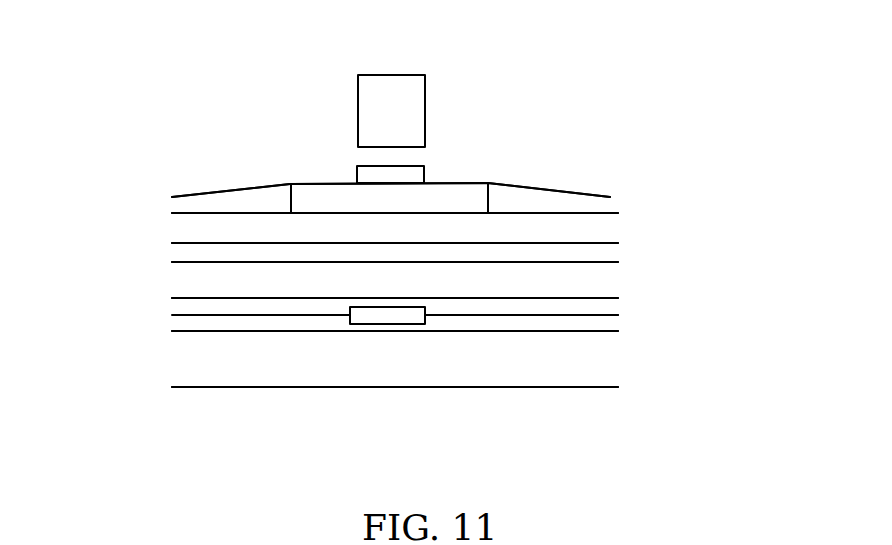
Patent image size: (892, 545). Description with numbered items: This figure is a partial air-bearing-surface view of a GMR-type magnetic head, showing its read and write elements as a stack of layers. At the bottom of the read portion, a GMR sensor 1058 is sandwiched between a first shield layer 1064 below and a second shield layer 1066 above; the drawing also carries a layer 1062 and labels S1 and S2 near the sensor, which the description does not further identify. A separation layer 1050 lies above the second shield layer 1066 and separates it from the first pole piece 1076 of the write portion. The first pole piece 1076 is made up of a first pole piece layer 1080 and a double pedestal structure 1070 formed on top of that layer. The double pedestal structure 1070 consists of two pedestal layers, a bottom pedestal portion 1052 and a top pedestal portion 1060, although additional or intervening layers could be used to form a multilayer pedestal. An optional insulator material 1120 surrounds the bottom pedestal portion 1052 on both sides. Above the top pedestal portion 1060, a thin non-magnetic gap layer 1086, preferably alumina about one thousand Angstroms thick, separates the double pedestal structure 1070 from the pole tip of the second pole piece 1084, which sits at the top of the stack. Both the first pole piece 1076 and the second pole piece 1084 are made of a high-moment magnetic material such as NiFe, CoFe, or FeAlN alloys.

The second pole piece 1084 is at (408, 103).
The gap layer 1086 is at (357, 153).
The top pedestal portion 1060 is at (357, 168).
The bottom pedestal portion 1052 is at (318, 195).
The insulator material 1120 is at (187, 202).
The double pedestal structure 1070 is at (443, 137).
The first pole piece 1076 is at (637, 67).
The first pole piece layer 1080 is at (607, 230).
The separation layer 1050 is at (187, 255).
The second shield layer 1066 is at (607, 277).
The first shield layer 1064 is at (607, 358).
The conductor line 1062 is at (547, 307).
The GMR sensor 1058 is at (367, 325).
The sensor S1 is at (383, 365).
The sensor S2 is at (383, 285).